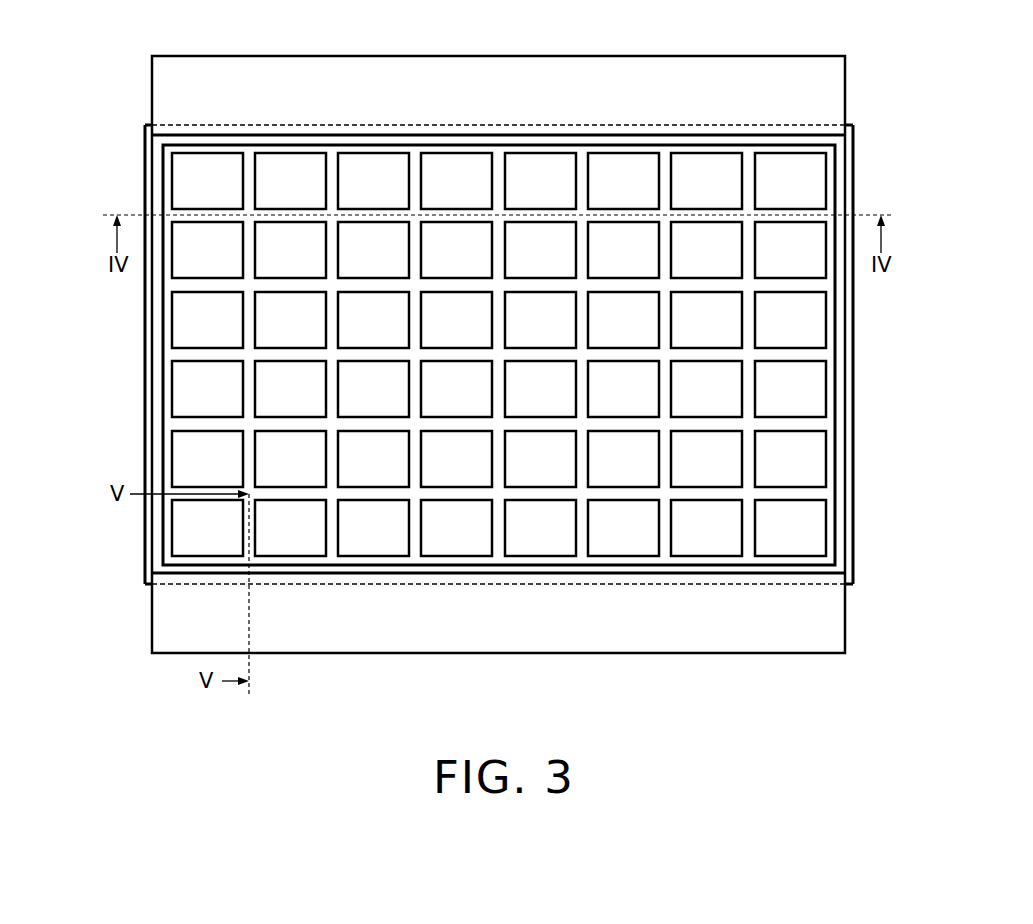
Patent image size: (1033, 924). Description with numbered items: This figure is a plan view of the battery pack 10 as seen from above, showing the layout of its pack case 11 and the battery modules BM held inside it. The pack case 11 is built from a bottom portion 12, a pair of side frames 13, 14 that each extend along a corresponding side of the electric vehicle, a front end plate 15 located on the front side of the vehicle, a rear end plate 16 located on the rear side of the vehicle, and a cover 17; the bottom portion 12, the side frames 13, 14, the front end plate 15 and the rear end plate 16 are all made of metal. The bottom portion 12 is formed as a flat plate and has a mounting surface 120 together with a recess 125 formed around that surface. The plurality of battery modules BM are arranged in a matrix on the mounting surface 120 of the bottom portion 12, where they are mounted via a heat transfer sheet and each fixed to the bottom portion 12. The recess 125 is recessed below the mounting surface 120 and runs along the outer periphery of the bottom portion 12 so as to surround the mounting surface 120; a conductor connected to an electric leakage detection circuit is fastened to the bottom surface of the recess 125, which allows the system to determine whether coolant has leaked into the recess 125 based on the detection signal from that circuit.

The battery pack 10 is at (112, 107).
The pack case 11 is at (143, 557).
The bottom portion 12 is at (733, 146).
The side frame 13 is at (505, 644).
The side frame 14 is at (505, 57).
The front end plate 15 is at (143, 345).
The rear end plate 16 is at (853, 343).
The cover 17 is at (262, 125).
The mounting surface 120 is at (332, 556).
The recess 125 is at (675, 574).
The battery module BM is at (810, 533).